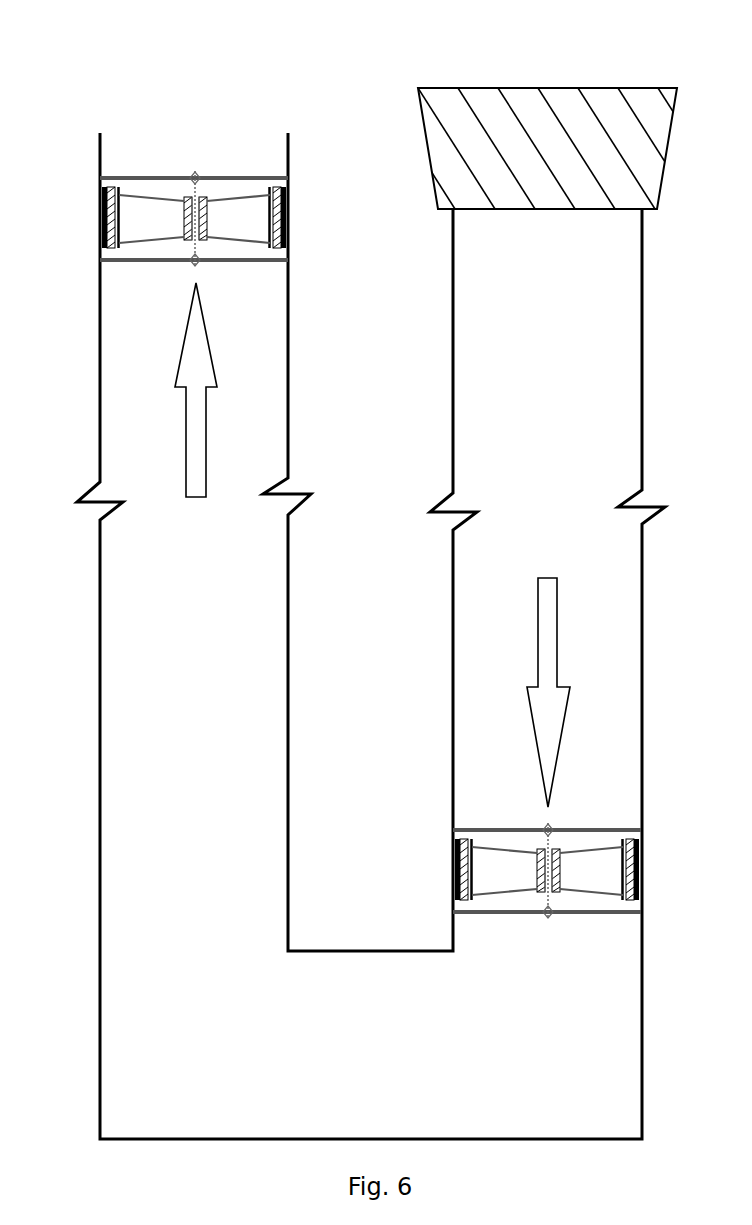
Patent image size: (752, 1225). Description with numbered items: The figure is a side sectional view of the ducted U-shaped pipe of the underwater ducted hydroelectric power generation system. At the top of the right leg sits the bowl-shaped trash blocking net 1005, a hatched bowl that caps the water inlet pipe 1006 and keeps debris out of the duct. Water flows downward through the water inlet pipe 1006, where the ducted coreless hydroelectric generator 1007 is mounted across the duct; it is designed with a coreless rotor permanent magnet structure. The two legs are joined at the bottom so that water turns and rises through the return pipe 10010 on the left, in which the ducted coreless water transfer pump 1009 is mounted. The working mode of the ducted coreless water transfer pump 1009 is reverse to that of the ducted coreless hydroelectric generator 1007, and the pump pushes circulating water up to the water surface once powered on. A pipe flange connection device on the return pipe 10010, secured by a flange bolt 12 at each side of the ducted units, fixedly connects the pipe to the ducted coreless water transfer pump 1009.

The flange bolt 12 is at (100, 178).
The bowl-shaped trash blocking net 1005 is at (543, 88).
The water inlet pipe 1006 is at (642, 830).
The ducted coreless hydroelectric generator 1007 is at (518, 830).
The ducted coreless water transfer pump 1009 is at (175, 178).
The return pipe 10010 is at (288, 177).